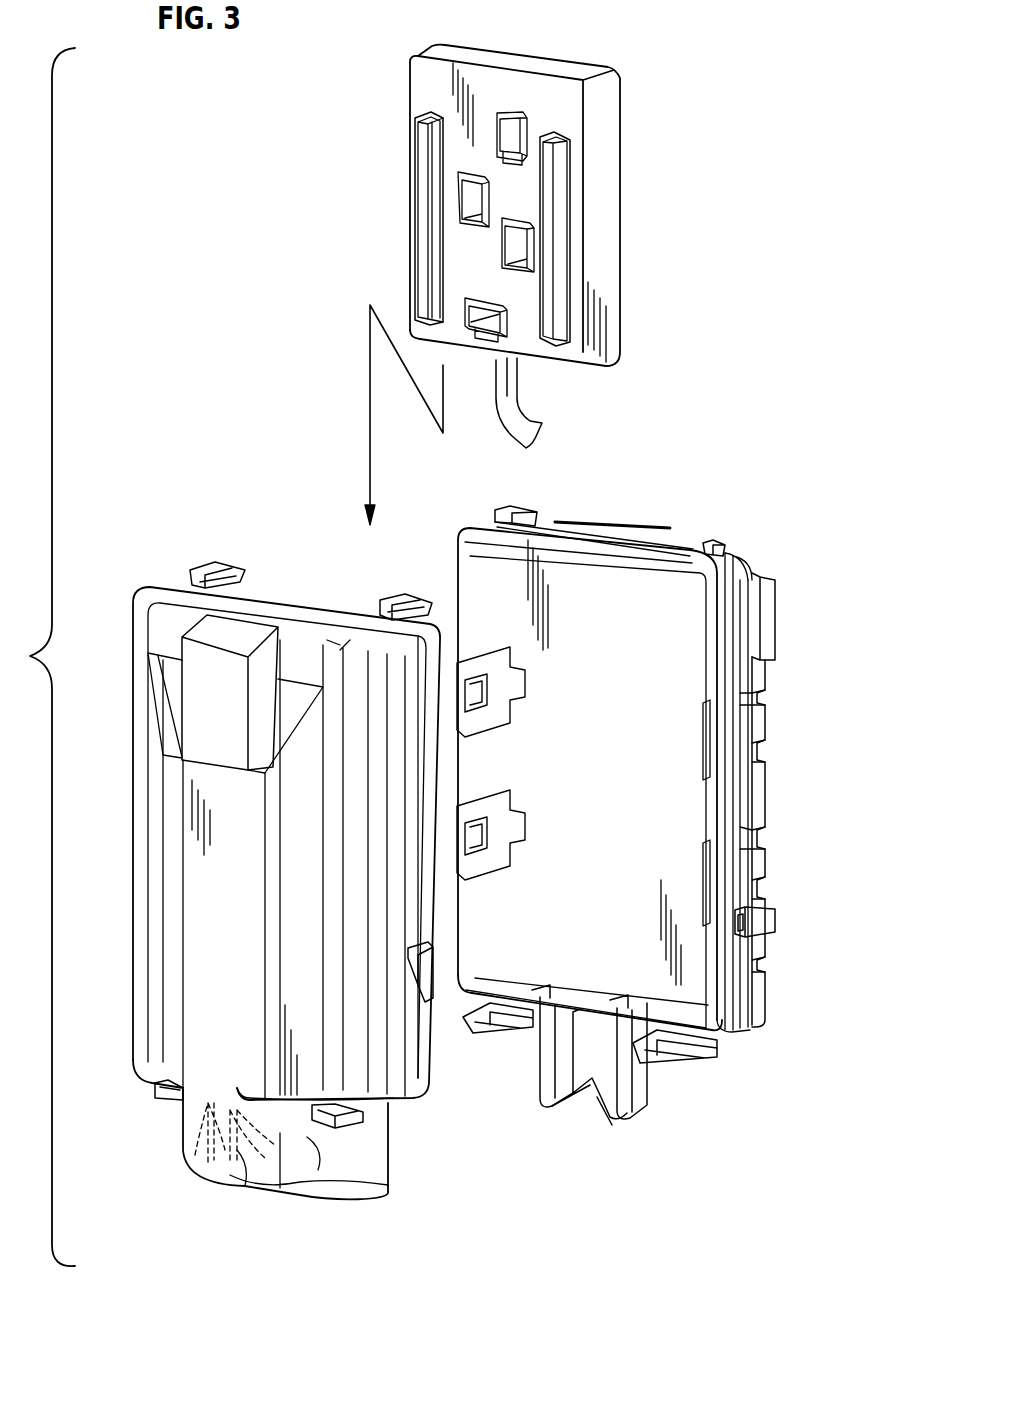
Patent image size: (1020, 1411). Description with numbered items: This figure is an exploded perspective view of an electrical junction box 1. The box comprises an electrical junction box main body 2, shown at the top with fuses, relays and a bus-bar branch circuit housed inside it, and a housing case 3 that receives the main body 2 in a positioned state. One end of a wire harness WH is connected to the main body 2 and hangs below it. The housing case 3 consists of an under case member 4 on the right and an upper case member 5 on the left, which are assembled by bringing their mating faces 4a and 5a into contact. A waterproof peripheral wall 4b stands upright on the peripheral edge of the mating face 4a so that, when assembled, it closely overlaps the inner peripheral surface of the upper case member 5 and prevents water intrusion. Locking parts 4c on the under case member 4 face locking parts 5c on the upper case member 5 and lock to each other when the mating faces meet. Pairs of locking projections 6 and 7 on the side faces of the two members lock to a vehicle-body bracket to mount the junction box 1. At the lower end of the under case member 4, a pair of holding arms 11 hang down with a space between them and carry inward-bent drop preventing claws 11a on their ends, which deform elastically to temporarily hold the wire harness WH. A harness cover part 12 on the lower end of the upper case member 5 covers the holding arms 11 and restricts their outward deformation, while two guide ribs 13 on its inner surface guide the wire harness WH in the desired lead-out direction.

The electrical junction box 1 is at (729, 340).
The electrical junction box main body 2 is at (598, 197).
The wire harness WH is at (512, 398).
The housing case 3 is at (156, 577).
The under case member 4 is at (752, 793).
The mating face 4a is at (715, 853).
The waterproof peripheral wall 4b is at (722, 727).
The locking part 4c is at (525, 518).
The upper case member 5 is at (140, 834).
The mating face 5a is at (430, 830).
The locking part 5c is at (205, 570).
The locking projection 6 is at (760, 918).
The locking projection 7 is at (432, 968).
The holding arm 11 is at (552, 1055).
The drop preventing claw 11a is at (602, 1092).
The harness cover part 12 is at (307, 1145).
The guide rib 13 is at (240, 1165).